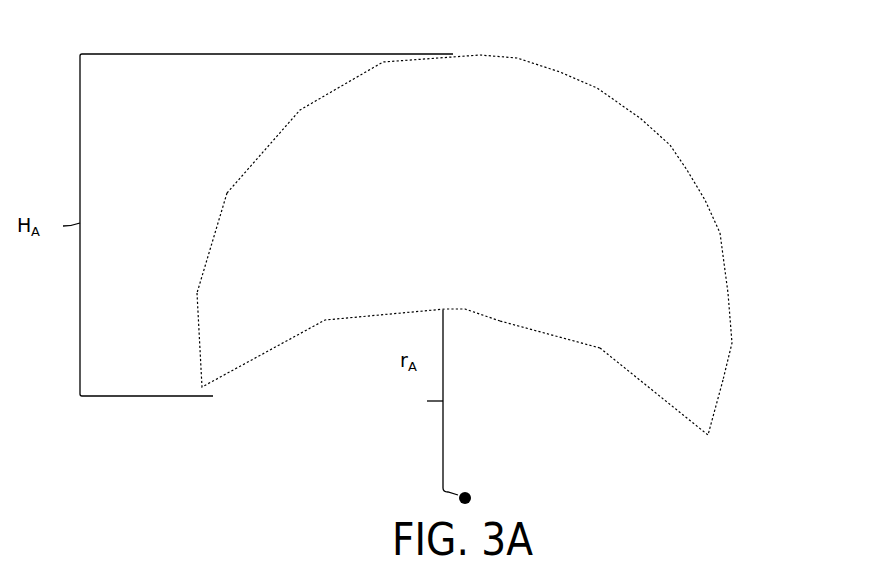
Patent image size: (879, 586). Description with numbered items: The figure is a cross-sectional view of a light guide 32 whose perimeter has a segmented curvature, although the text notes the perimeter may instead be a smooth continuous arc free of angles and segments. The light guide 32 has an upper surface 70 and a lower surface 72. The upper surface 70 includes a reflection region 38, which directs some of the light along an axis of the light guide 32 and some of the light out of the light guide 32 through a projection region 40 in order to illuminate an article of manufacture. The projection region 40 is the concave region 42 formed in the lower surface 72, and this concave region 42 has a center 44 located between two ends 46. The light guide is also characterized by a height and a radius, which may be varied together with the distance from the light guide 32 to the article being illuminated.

The light guide 32 is at (749, 238).
The reflection region 38 is at (257, 169).
The projection region 40 is at (547, 308).
The concave region 42 is at (340, 357).
The center 44 is at (472, 311).
The ends 46 is at (708, 435).
The upper surface 70 is at (567, 33).
The lower surface 72 is at (539, 351).